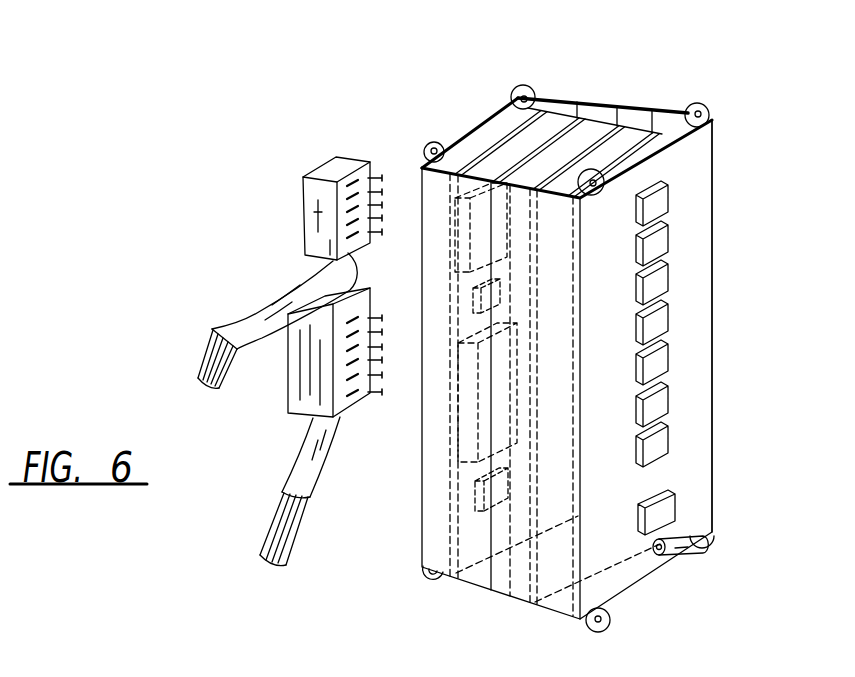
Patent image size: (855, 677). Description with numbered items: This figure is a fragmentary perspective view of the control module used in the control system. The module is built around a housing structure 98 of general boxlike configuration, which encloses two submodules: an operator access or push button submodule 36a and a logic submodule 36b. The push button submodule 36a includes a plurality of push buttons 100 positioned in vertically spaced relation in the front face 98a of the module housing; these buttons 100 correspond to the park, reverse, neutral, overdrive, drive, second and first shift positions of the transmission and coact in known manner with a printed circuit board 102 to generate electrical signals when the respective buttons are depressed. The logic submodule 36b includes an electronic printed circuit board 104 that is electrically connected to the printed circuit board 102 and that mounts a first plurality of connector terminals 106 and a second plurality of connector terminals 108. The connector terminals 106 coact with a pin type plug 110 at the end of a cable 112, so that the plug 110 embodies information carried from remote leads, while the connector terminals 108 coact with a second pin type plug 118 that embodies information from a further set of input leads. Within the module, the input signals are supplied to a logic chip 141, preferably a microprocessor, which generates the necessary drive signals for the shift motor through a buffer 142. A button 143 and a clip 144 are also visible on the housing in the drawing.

The push button submodule 36a is at (687, 103).
The logic submodule 36b is at (586, 109).
The housing structure 98 is at (441, 533).
The front face 98a is at (703, 352).
The push buttons 100 is at (668, 202).
The printed circuit board 102 is at (637, 109).
The electronic printed circuit board 104 is at (544, 97).
The first plurality of connector terminals 106 is at (454, 410).
The second plurality of connector terminals 108 is at (456, 236).
The pin type plug 110 is at (300, 376).
The cable 112 is at (307, 456).
The pin type plug 118 is at (338, 170).
The logic chip 141 is at (464, 306).
The buffer 142 is at (474, 497).
The button 143 is at (665, 517).
The clip 144 is at (685, 552).